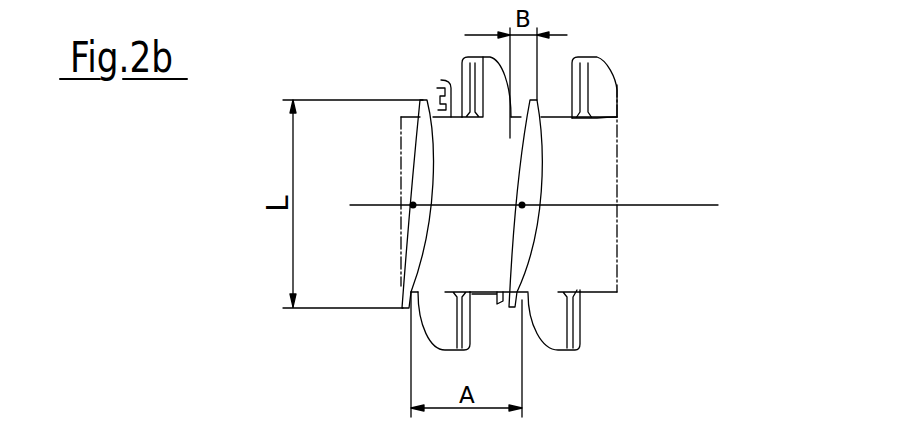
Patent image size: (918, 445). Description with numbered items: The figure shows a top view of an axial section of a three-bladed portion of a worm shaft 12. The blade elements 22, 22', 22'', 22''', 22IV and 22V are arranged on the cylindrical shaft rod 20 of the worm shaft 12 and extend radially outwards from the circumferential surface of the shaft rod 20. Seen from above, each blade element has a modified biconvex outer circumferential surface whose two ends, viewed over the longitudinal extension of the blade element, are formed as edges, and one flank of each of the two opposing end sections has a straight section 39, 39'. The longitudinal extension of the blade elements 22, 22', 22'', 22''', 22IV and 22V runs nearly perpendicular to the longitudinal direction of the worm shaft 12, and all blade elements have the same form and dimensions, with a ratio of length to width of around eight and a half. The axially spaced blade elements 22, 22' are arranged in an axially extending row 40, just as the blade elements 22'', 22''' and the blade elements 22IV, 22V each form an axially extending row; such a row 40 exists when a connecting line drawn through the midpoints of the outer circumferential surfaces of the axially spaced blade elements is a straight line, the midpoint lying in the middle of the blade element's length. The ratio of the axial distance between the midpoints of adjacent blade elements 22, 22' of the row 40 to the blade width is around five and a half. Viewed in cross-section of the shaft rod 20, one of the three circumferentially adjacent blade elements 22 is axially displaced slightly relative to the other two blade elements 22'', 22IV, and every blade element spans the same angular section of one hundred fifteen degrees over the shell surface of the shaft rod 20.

The worm shaft 12 is at (215, 362).
The shaft rod 20 is at (603, 263).
The blade element 22 is at (609, 203).
The blade element 22' is at (385, 204).
The blade element 22'' is at (424, 60).
The blade element 22''' is at (650, 87).
The blade element 22IV is at (605, 313).
The blade element 22V is at (436, 312).
The straight section 39 is at (394, 88).
The straight section 39' is at (494, 333).
The axially extending row 40 is at (703, 207).